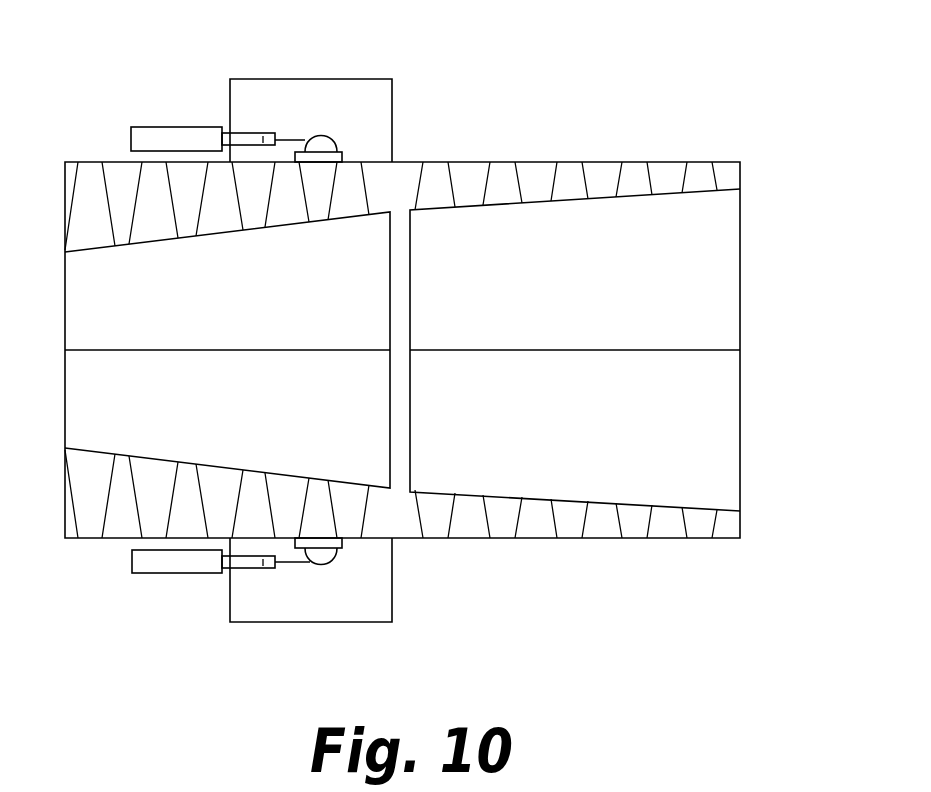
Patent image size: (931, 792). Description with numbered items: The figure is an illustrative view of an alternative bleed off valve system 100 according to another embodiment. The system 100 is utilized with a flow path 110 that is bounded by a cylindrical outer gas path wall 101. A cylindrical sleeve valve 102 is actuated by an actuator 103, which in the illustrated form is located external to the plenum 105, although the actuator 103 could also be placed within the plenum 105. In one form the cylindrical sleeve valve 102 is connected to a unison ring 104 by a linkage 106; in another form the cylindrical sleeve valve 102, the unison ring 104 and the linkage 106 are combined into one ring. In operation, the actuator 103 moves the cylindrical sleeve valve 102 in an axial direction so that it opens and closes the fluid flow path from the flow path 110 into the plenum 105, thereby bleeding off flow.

The bleed off valve system 100 is at (552, 61).
The cylindrical outer gas path wall 101 is at (352, 162).
The cylindrical sleeve valve 102 is at (333, 152).
The actuator 103 is at (195, 127).
The unison ring 104 is at (245, 128).
The plenum 105 is at (308, 118).
The linkage 106 is at (293, 140).
The flow path 110 is at (190, 185).